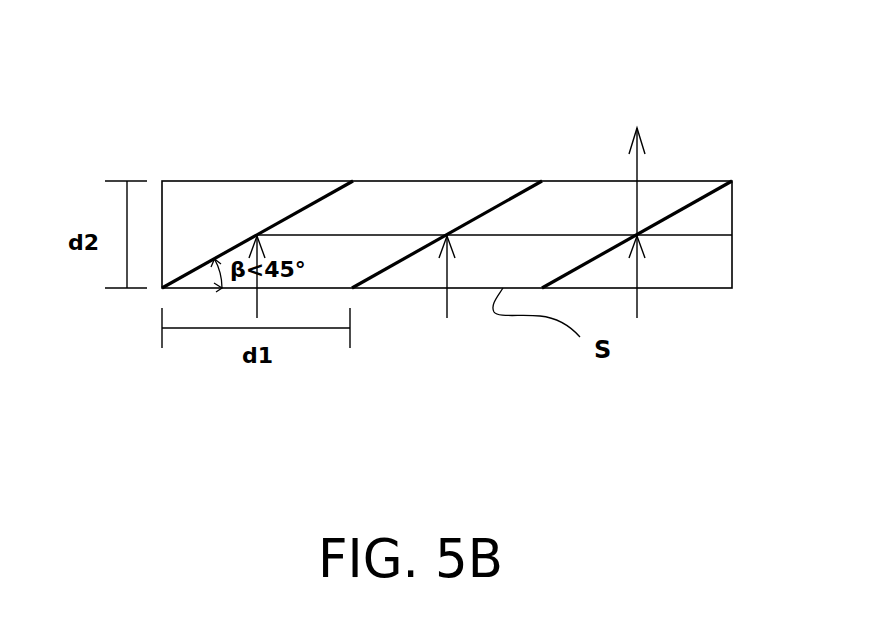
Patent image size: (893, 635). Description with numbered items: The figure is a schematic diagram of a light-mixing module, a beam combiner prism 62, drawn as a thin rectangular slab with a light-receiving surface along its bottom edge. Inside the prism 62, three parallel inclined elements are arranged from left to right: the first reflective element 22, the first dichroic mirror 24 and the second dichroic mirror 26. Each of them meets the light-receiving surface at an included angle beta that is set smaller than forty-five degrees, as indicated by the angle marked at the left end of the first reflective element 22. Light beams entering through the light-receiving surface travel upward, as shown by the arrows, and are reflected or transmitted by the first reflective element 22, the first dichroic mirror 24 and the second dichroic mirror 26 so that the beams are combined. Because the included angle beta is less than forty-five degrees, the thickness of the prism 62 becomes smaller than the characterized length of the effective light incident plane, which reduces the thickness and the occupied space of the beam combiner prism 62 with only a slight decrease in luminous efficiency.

The light guide plate / optical structure 62 is at (86, 76).
The first reflective element 22 is at (276, 224).
The first dichroic mirror 24 is at (466, 224).
The second dichroic mirror 26 is at (653, 224).